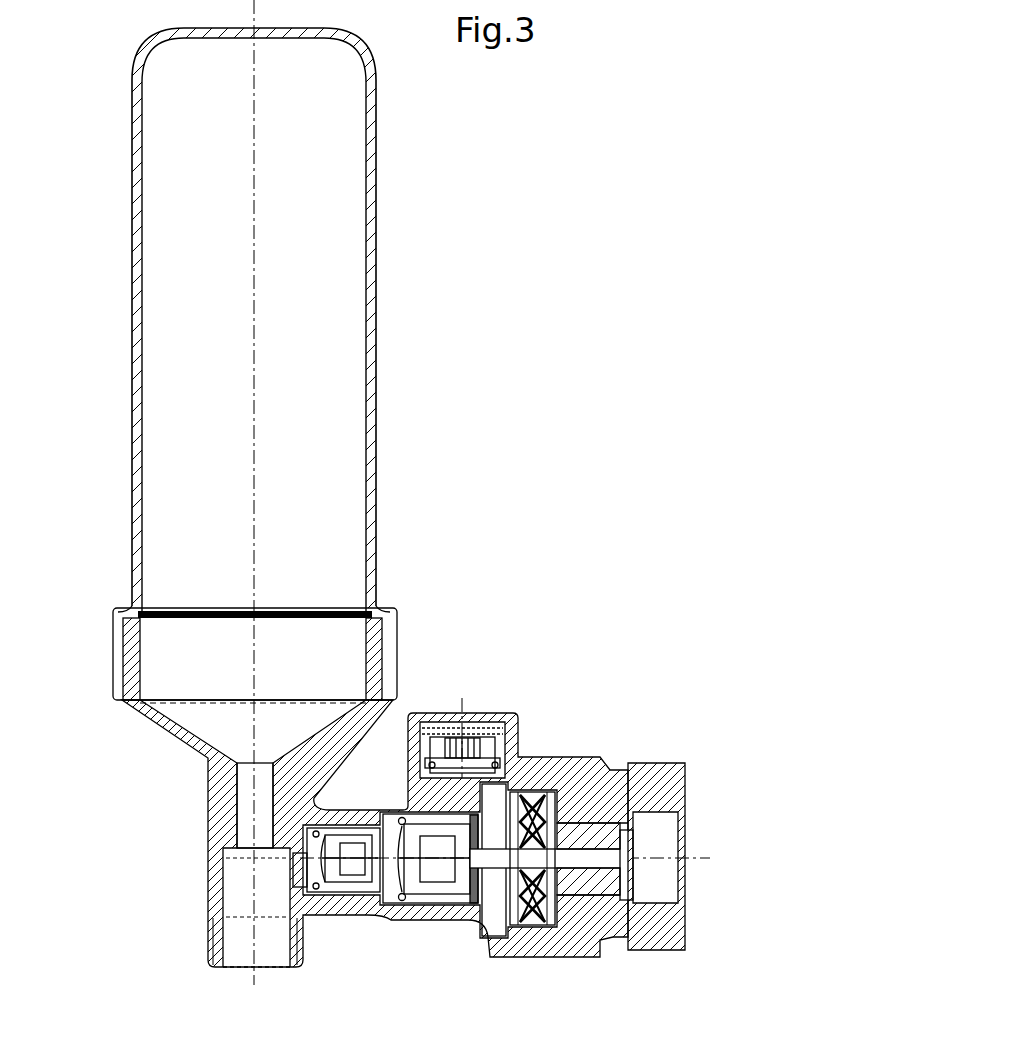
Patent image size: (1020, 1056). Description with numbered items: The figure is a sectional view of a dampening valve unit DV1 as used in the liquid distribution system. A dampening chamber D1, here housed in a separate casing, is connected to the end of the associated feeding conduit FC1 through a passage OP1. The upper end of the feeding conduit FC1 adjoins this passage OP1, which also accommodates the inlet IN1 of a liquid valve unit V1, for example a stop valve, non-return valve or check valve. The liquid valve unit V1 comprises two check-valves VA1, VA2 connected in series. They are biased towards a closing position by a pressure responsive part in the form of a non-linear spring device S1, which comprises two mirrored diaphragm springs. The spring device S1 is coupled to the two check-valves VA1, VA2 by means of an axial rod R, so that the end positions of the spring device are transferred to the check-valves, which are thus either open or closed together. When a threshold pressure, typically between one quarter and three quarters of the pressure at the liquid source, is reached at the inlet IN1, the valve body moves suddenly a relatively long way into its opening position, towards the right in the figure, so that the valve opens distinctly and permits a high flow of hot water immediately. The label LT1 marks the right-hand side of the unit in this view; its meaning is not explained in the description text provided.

The dampening valve unit DV1 is at (490, 586).
The dampening chamber D1 is at (378, 316).
The liquid valve unit V1 is at (483, 962).
The passage OP1 is at (228, 873).
The inlet IN1 is at (285, 866).
The feeding conduit FC1 is at (260, 996).
The first check-valve VA1 is at (337, 893).
The second check-valve VA2 is at (425, 885).
The non-linear spring device S1 is at (562, 938).
The axial rod R is at (601, 888).
The lateral side LT1 is at (710, 856).